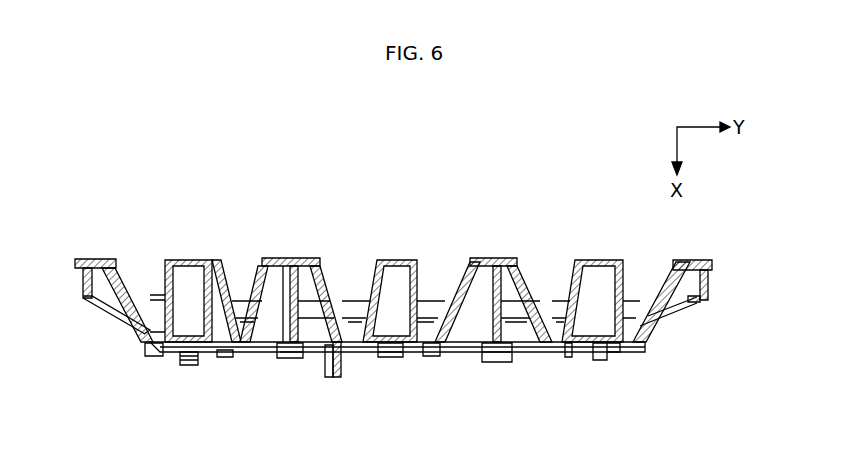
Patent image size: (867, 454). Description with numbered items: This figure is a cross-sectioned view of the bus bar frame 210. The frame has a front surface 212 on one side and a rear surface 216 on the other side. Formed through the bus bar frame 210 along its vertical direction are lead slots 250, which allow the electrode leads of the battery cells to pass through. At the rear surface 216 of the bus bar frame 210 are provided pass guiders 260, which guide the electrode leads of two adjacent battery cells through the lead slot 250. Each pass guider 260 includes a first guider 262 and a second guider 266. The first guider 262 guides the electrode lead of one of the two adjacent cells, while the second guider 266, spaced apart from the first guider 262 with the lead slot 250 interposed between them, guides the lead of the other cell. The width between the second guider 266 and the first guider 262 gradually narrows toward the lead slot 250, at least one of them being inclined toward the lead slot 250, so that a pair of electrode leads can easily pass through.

The bus bar frame 210 is at (153, 200).
The pass guider 260 is at (238, 268).
The first guider 262 is at (330, 267).
The second guider 266 is at (352, 268).
The rear surface 216 is at (508, 265).
The lead slot 250 is at (237, 357).
The front surface 212 is at (497, 363).